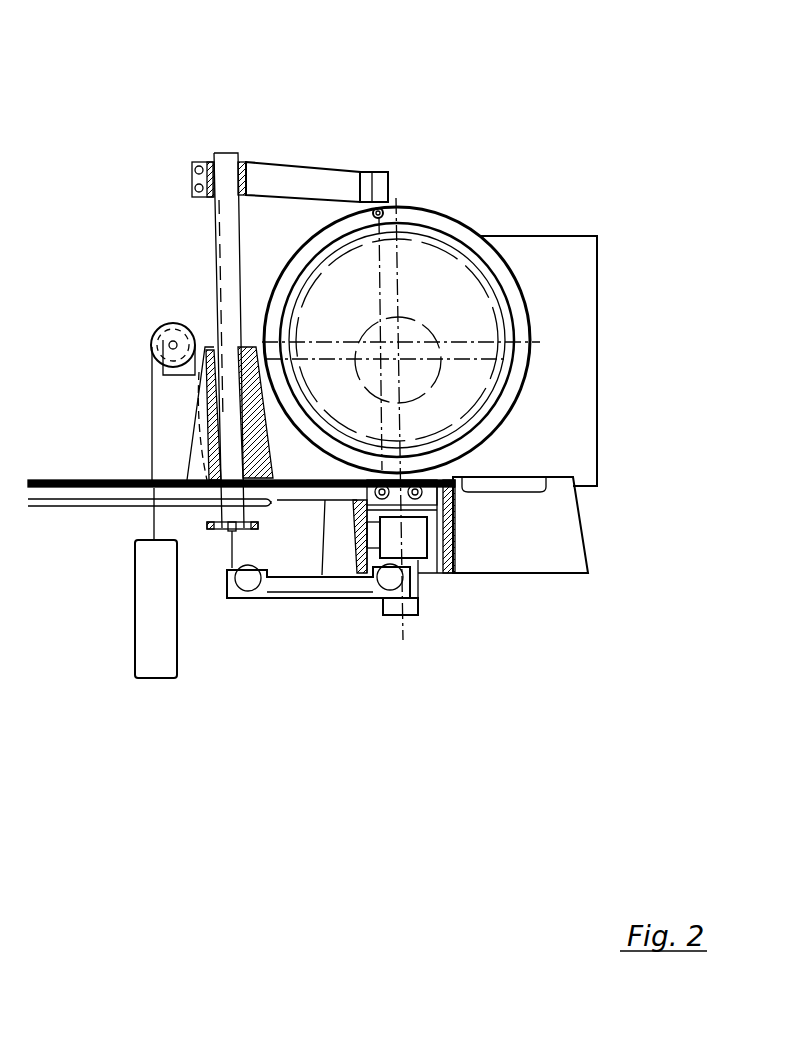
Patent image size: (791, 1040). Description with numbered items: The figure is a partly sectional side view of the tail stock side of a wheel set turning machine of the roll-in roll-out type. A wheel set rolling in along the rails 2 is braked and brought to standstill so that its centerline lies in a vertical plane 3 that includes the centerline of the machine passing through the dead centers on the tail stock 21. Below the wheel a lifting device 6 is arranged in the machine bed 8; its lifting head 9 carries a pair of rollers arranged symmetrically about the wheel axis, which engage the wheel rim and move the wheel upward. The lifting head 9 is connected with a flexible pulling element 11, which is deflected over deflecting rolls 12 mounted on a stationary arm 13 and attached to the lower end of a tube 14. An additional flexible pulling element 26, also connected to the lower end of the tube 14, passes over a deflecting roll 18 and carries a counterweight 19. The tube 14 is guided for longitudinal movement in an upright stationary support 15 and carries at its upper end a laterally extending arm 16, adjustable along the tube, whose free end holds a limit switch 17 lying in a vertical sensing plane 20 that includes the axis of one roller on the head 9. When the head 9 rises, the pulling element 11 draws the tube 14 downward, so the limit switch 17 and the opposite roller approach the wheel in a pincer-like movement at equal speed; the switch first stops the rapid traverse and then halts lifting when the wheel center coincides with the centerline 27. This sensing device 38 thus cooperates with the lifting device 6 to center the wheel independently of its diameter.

The rails 2 is at (120, 497).
The vertical plane 3 is at (397, 268).
The lifting device 6 is at (410, 526).
The machine bed 8 is at (503, 557).
The lifting head 9 is at (447, 477).
The flexible pulling element 11 is at (402, 542).
The deflecting rolls 12 is at (385, 588).
The stationary arm 13 is at (312, 582).
The tube 14 is at (215, 250).
The upright stationary support 15 is at (197, 455).
The laterally extending arm 16 is at (272, 170).
The limit switch 17 is at (377, 207).
The deflecting roll 18 is at (163, 332).
The counterweight 19 is at (150, 598).
The vertical sensing plane 20 is at (378, 410).
The tail stock 21 is at (557, 257).
The additional flexible pulling element 26 is at (152, 400).
The centerline 27 is at (398, 342).
The sensing device 38 is at (196, 162).